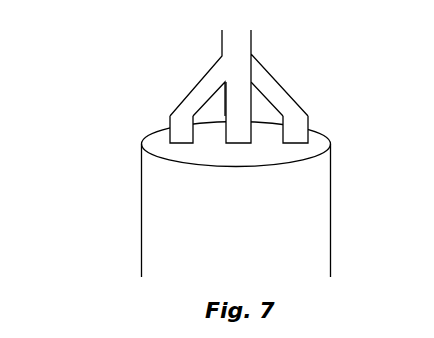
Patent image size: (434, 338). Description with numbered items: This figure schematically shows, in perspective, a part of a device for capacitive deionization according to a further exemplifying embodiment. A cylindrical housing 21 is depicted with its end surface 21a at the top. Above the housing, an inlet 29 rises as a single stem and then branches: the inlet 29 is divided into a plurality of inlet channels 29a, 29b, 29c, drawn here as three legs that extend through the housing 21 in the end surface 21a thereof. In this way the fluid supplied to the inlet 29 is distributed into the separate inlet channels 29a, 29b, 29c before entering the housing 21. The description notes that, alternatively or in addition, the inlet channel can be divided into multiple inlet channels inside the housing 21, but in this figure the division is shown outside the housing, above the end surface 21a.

The housing 21 is at (166, 225).
The end surface 21a is at (268, 148).
The inlet 29 is at (219, 86).
The inlet channel 29a is at (179, 133).
The inlet channel 29b is at (240, 105).
The inlet channel 29c is at (297, 127).